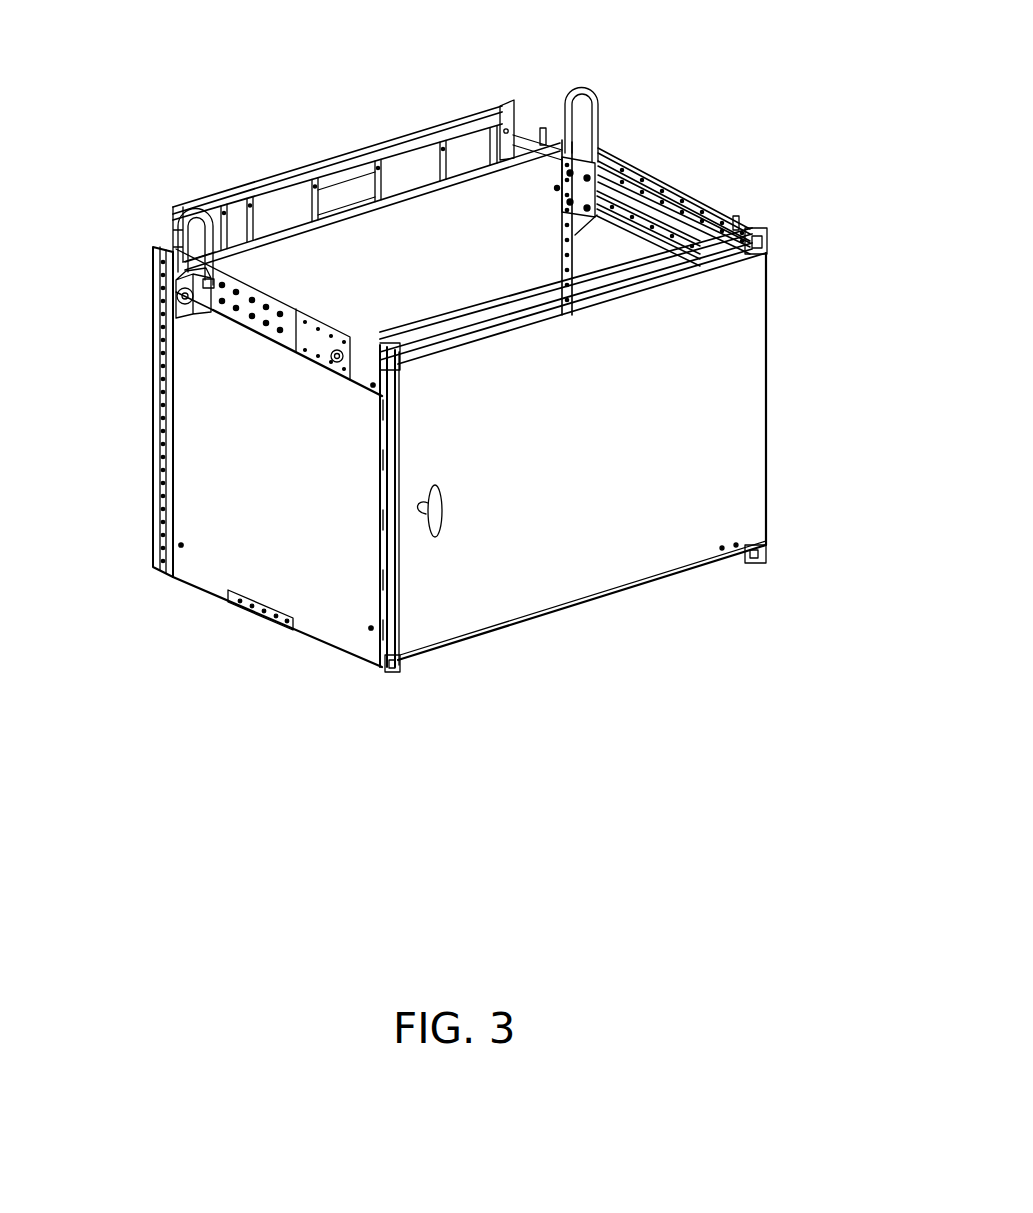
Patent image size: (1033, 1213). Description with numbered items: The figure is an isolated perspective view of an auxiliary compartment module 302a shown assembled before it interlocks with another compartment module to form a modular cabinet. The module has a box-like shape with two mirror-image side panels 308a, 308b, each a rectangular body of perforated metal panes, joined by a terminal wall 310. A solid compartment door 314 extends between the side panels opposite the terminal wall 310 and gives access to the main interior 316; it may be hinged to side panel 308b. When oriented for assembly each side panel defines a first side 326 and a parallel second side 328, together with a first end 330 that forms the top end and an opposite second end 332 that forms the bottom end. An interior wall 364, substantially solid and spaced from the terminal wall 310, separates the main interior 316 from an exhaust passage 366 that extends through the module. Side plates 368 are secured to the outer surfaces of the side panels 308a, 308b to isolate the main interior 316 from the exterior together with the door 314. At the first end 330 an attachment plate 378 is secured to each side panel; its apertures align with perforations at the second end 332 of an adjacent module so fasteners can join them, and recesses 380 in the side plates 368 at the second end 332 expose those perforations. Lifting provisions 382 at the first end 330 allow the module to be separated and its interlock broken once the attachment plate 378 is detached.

The auxiliary compartment module 302a is at (663, 76).
The side panel 308a is at (131, 278).
The side panel 308b is at (741, 193).
The terminal wall 310 is at (320, 182).
The compartment door 314 is at (740, 367).
The main interior 316 is at (500, 277).
The first side 326 is at (412, 693).
The second side 328 is at (139, 476).
The first end 330 is at (309, 301).
The second end 332 is at (300, 654).
The interior wall 364 is at (352, 225).
The exhaust passage 366 is at (412, 168).
The side plate 368 is at (268, 562).
The attachment plate 378 is at (207, 312).
The recess 380 is at (262, 616).
The lifting provision 382 is at (190, 207).